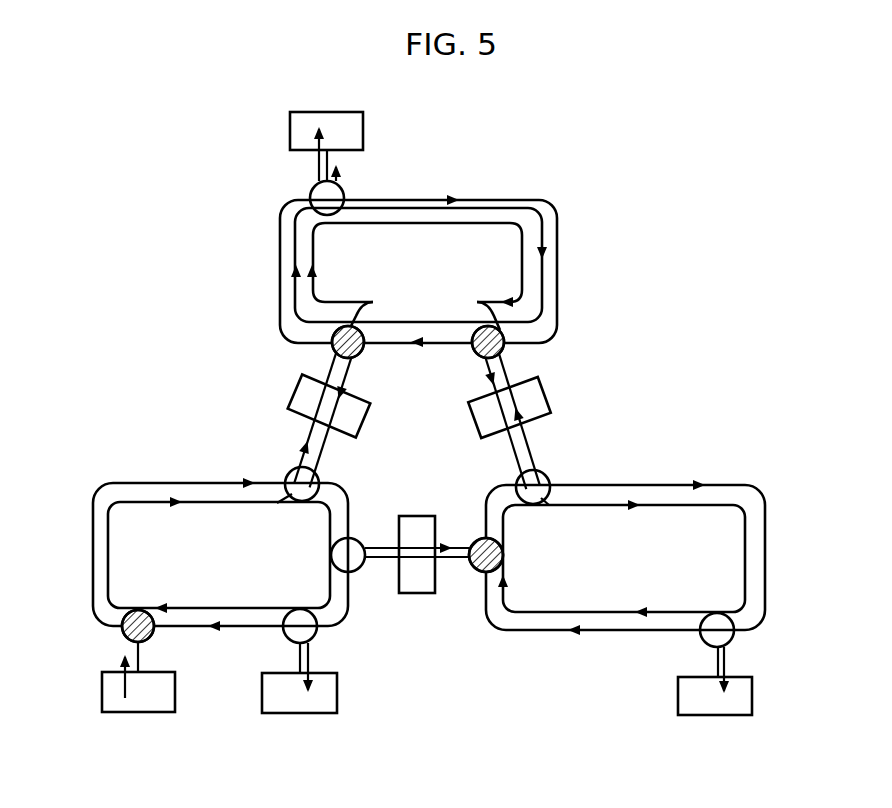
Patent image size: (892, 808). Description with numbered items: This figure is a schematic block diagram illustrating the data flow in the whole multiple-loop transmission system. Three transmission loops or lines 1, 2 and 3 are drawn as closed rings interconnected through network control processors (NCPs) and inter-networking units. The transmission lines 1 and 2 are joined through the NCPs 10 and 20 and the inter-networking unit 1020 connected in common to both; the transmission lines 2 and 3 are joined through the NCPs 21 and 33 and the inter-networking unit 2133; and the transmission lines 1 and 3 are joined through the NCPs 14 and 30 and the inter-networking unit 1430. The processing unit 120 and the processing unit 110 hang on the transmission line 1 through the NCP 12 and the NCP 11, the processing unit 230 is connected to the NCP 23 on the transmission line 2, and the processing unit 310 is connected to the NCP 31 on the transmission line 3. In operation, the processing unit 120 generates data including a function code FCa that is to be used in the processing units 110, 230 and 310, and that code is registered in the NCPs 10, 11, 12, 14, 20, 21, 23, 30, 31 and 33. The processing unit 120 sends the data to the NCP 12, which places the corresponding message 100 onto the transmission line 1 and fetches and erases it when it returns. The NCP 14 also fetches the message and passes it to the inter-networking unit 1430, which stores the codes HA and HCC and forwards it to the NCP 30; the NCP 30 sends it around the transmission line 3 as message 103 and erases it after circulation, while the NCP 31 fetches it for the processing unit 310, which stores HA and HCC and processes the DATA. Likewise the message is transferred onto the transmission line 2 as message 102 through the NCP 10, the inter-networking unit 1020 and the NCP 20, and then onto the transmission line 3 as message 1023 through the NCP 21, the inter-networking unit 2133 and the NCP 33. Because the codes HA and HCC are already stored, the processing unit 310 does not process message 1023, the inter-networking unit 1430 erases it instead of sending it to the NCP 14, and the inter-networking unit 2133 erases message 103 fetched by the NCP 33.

The transmission line 1 is at (93, 566).
The transmission line 2 is at (765, 567).
The transmission line 3 is at (557, 272).
The network control processor 10 is at (353, 572).
The network control processor 11 is at (316, 635).
The network control processor 12 is at (153, 634).
The network control processor 14 is at (316, 476).
The network control processor 20 is at (475, 572).
The network control processor 21 is at (548, 476).
The network control processor 23 is at (733, 638).
The network control processor 30 is at (363, 348).
The network control processor 31 is at (338, 186).
The network control processor 33 is at (505, 346).
The message 100 is at (230, 503).
The message 102 is at (625, 506).
The message 103 is at (296, 304).
The processing unit 110 is at (295, 713).
The processing unit 120 is at (133, 712).
The processing unit 230 is at (718, 715).
The processing unit 310 is at (363, 130).
The inter-networking unit 1020 is at (417, 593).
The message 1023 is at (437, 224).
The inter-networking unit 1430 is at (364, 420).
The inter-networking unit 2133 is at (550, 395).